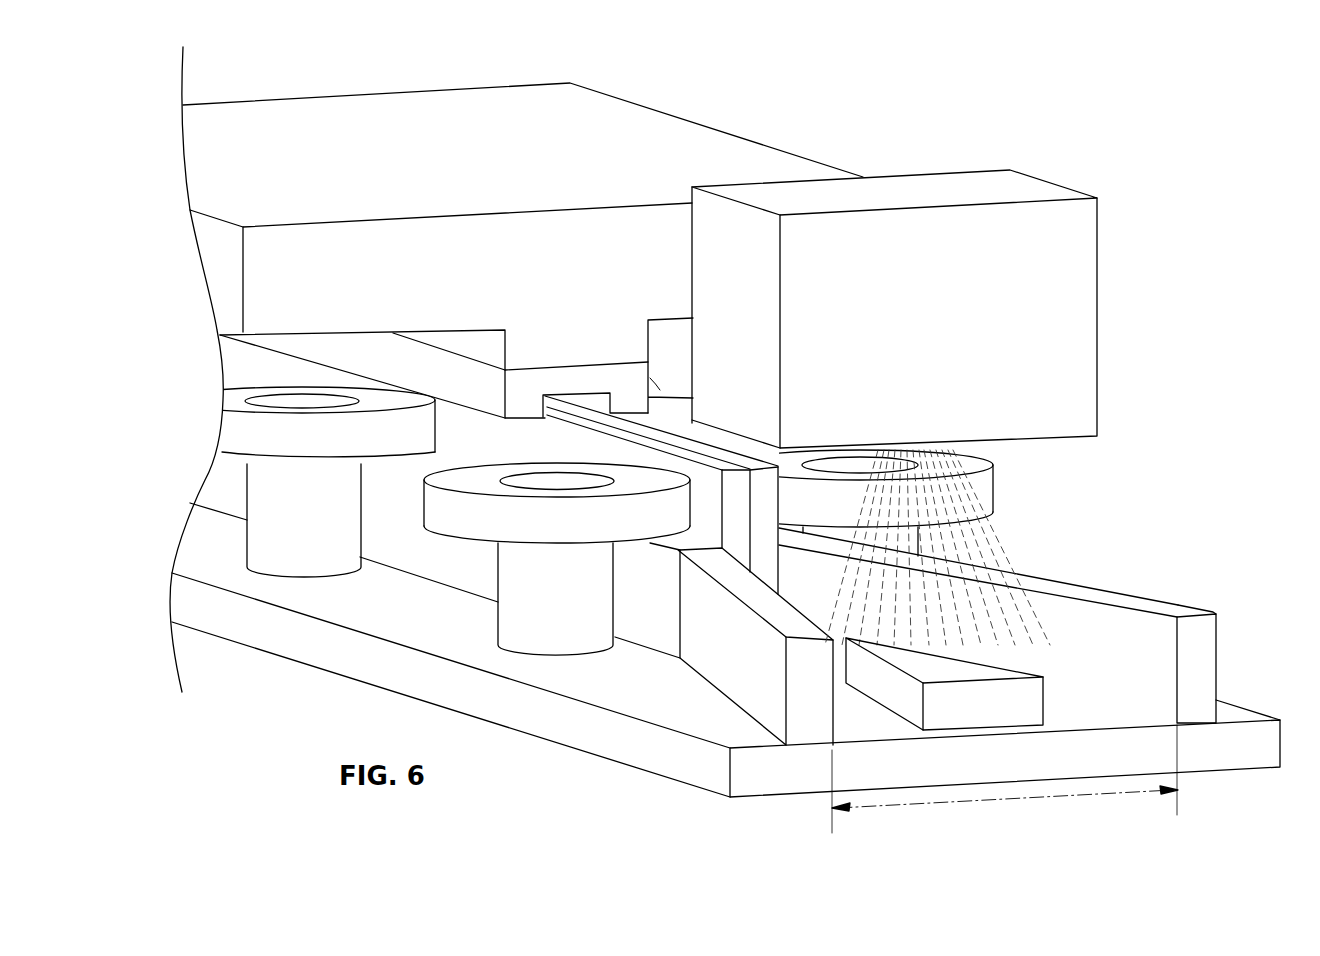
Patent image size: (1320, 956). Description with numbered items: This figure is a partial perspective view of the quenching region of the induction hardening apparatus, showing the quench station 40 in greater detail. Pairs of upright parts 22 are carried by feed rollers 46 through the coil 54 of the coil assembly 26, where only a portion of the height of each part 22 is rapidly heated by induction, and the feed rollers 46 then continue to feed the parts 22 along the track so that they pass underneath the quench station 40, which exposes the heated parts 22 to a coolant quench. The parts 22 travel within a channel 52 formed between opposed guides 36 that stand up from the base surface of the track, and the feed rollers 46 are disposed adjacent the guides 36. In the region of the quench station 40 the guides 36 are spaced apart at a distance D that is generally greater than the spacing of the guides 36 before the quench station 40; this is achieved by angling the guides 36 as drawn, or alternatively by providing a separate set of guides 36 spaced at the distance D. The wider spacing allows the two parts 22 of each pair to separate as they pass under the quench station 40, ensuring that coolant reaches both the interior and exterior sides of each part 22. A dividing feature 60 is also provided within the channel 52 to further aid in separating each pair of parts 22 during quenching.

The coil assembly 26 is at (653, 122).
The quench station 40 is at (1027, 188).
The coil 54 is at (533, 390).
The parts 22 is at (567, 397).
The feed rollers 46 is at (212, 432).
The guides 36 is at (440, 560).
The channel 52 is at (1068, 612).
The dividing feature 60 is at (990, 703).
The distance D is at (1050, 797).